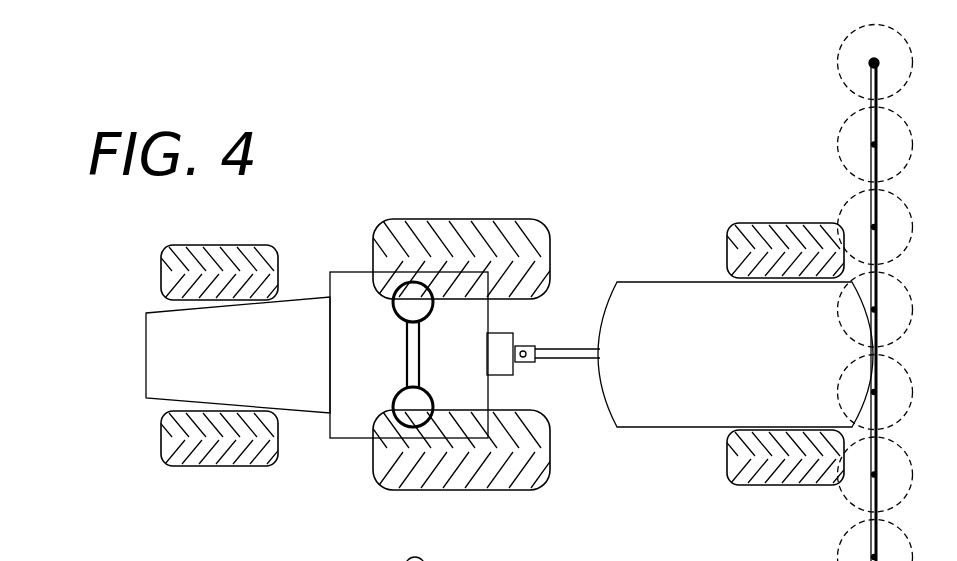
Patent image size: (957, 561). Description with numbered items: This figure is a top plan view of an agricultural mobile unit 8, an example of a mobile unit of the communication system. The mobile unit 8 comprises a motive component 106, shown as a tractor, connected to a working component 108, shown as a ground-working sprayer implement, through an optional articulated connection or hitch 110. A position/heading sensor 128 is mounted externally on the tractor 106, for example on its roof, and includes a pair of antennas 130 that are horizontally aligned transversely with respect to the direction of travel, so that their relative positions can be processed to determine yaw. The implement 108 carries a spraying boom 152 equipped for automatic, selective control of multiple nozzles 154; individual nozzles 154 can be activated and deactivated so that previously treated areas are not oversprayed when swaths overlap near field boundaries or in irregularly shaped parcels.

The agricultural mobile unit 8 is at (391, 144).
The motive component 106 is at (293, 365).
The working component 108 is at (763, 361).
The articulated connection 110 is at (522, 346).
The position/heading sensor 128 is at (420, 355).
The antennas 130 is at (398, 314).
The boom 152 is at (866, 94).
The nozzles 154 is at (871, 147).